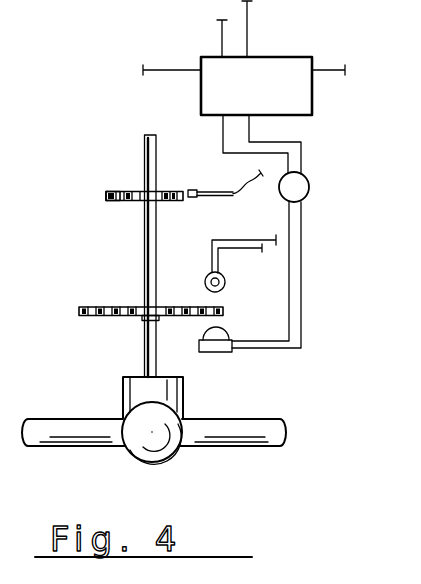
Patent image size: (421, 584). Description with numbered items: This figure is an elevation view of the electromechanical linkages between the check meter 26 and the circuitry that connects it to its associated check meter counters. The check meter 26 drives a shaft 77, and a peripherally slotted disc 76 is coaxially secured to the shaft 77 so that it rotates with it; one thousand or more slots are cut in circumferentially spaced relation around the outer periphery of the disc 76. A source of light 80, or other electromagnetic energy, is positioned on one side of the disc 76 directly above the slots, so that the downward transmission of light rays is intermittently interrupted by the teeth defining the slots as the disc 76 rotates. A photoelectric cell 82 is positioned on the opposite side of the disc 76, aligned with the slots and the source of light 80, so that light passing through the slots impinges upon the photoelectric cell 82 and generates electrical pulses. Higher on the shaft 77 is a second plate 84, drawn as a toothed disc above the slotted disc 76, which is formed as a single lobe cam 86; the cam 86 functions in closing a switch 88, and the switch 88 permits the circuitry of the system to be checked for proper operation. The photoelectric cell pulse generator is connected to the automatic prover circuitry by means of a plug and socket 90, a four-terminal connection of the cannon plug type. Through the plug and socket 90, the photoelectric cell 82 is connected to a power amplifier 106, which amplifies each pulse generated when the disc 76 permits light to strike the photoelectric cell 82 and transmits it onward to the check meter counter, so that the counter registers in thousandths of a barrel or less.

The power amplifier 106 is at (244, 58).
The plug and socket 90 is at (307, 183).
The shaft 77 is at (145, 255).
The cam disc 84 is at (138, 203).
The single lobe cam 86 is at (108, 202).
The switch 88 is at (212, 197).
The source of light 80 is at (225, 280).
The peripherally slotted disc 76 is at (120, 325).
The photoelectric cell 82 is at (213, 352).
The check meter 26 is at (137, 452).